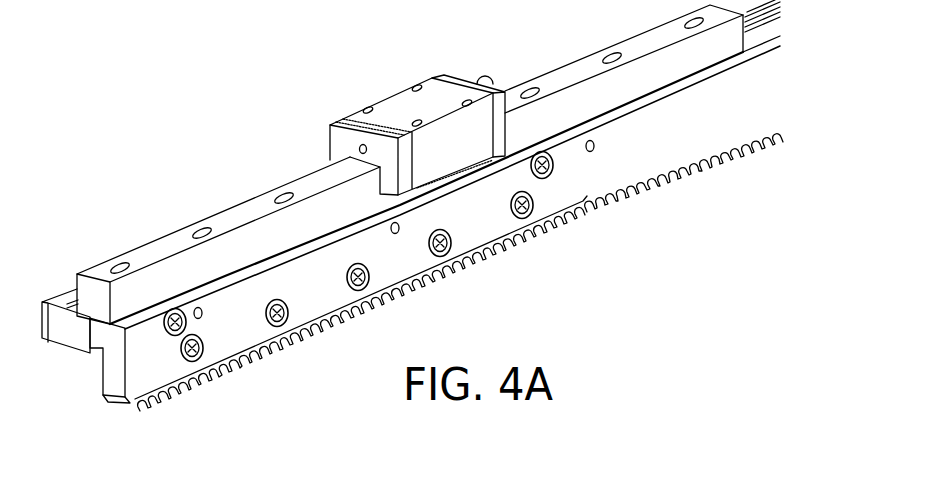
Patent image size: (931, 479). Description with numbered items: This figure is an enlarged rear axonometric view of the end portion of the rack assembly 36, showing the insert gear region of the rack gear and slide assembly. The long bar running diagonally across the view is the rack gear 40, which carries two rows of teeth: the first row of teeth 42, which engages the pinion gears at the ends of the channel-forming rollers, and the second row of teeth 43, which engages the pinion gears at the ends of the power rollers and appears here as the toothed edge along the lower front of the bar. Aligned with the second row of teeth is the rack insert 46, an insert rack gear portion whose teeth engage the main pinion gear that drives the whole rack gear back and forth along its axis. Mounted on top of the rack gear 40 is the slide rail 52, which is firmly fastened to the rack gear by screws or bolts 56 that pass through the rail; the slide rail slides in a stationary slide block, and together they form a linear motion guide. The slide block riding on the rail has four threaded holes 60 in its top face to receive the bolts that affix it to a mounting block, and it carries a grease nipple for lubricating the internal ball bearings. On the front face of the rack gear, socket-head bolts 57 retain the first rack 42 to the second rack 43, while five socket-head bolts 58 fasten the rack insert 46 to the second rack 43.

The rack assembly 36 is at (327, 57).
The rack gear 40 is at (38, 302).
The first row of teeth 42 is at (68, 292).
The second row of teeth 43 is at (640, 167).
The rack insert 46 is at (108, 392).
The slide rail 52 is at (234, 212).
The screws or bolts 56 is at (119, 264).
The socket-head bolts 57 is at (178, 336).
The socket-head bolts 58 is at (288, 326).
The threaded holes 60 is at (419, 85).